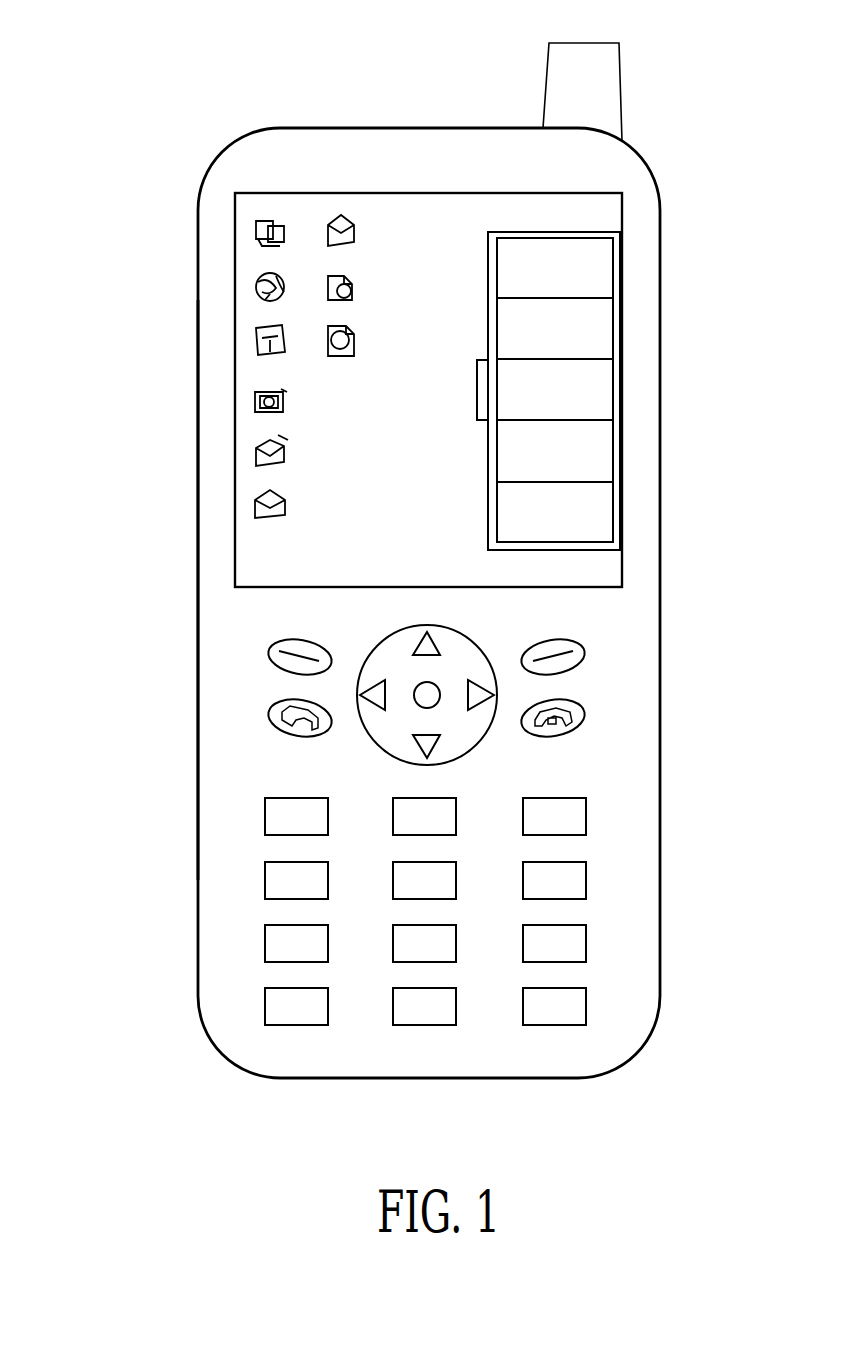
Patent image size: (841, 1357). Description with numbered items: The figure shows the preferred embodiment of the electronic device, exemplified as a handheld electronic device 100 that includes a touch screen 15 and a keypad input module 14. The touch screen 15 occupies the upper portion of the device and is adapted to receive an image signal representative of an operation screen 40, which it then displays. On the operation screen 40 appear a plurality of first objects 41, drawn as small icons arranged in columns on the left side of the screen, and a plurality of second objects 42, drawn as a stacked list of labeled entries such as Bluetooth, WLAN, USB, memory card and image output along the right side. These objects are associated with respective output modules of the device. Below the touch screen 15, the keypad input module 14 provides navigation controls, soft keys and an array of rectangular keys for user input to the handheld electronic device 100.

The handheld electronic device 100 is at (178, 152).
The operation screen 40 is at (422, 222).
The touch screen 15 is at (218, 232).
The first objects 41 is at (350, 335).
The second objects 42 is at (605, 330).
The keypad input module 14 is at (237, 882).